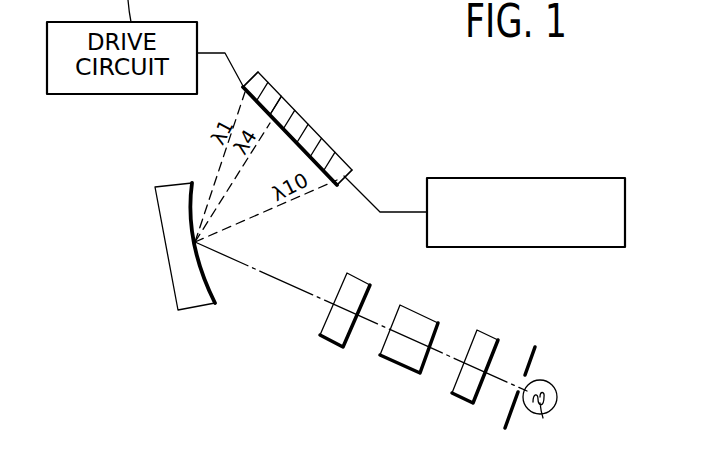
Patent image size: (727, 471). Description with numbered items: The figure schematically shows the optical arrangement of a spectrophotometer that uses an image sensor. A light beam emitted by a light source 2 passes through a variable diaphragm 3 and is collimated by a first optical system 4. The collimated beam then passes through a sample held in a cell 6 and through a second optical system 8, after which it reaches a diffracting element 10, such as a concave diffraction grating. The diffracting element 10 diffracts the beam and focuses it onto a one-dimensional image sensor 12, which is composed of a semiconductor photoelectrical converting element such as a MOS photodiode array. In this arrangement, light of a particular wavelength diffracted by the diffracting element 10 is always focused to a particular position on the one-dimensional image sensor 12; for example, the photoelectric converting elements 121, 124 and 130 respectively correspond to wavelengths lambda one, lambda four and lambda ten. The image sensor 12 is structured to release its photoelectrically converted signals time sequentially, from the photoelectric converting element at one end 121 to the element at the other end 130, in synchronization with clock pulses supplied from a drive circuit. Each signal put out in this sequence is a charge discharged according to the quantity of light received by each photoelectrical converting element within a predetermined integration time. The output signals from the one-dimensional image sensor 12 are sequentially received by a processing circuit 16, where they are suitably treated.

The light source 2 is at (558, 397).
The variable diaphragm 3 is at (537, 356).
The first optical system 4 is at (493, 338).
The cell 6 is at (393, 367).
The second optical system 8 is at (331, 348).
The diffracting element 10 is at (196, 312).
The one-dimensional image sensor 12 is at (310, 121).
The photoelectric converting element 121 is at (260, 72).
The photoelectric converting element 124 is at (282, 107).
The photoelectric converting element 130 is at (343, 167).
The processing circuit 16 is at (625, 202).